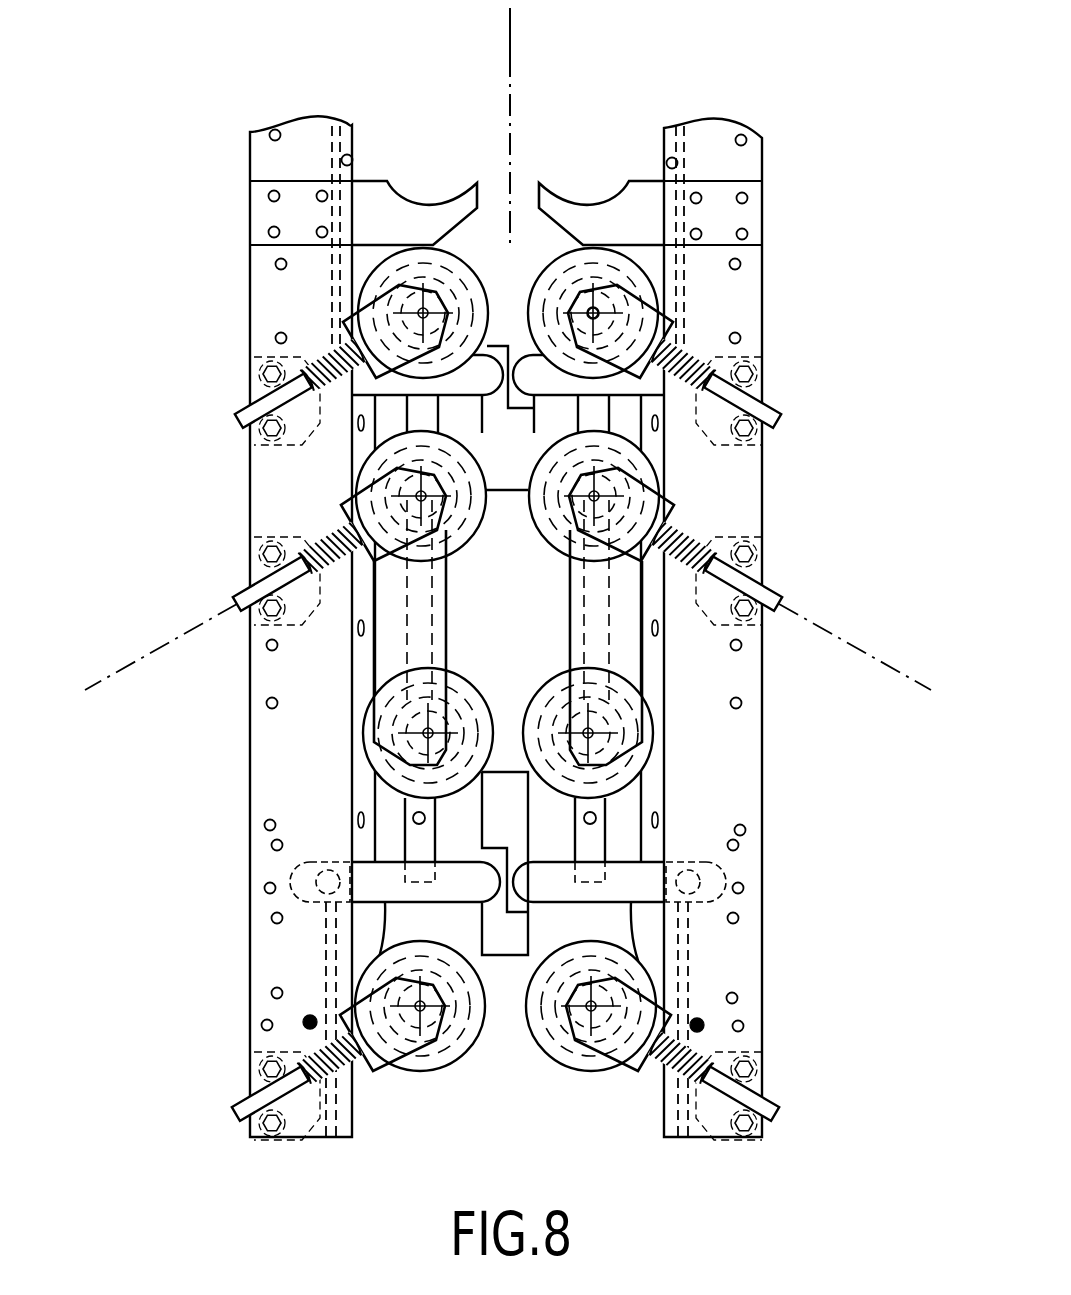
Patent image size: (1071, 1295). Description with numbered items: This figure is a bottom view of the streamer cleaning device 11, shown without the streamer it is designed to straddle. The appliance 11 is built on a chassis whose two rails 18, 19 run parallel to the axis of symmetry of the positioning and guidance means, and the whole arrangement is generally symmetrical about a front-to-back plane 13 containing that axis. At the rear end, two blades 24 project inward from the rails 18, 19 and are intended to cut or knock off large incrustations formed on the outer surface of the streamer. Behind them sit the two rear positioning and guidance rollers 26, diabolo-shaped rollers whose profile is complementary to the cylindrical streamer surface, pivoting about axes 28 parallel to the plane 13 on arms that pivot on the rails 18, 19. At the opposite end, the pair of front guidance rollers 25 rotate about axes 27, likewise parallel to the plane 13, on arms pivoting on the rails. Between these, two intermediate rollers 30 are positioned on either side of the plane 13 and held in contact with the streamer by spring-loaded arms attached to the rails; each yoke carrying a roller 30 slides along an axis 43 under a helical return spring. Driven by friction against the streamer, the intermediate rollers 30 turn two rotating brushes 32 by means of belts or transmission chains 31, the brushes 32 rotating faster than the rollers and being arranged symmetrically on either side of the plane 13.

The streamer cleaning device 11 is at (838, 410).
The front-to-back plane 13 is at (565, 129).
The rail 18 is at (268, 158).
The rail 19 is at (748, 160).
The blade 24 is at (465, 188).
The front guidance roller 25 is at (505, 1033).
The rear positioning and guidance roller 26 is at (548, 258).
The axis 27 is at (420, 1008).
The axis 28 is at (598, 311).
The intermediate roller 30 is at (357, 470).
The transmission chain 31 is at (410, 646).
The rotating brush 32 is at (372, 756).
The axis 43 is at (148, 650).